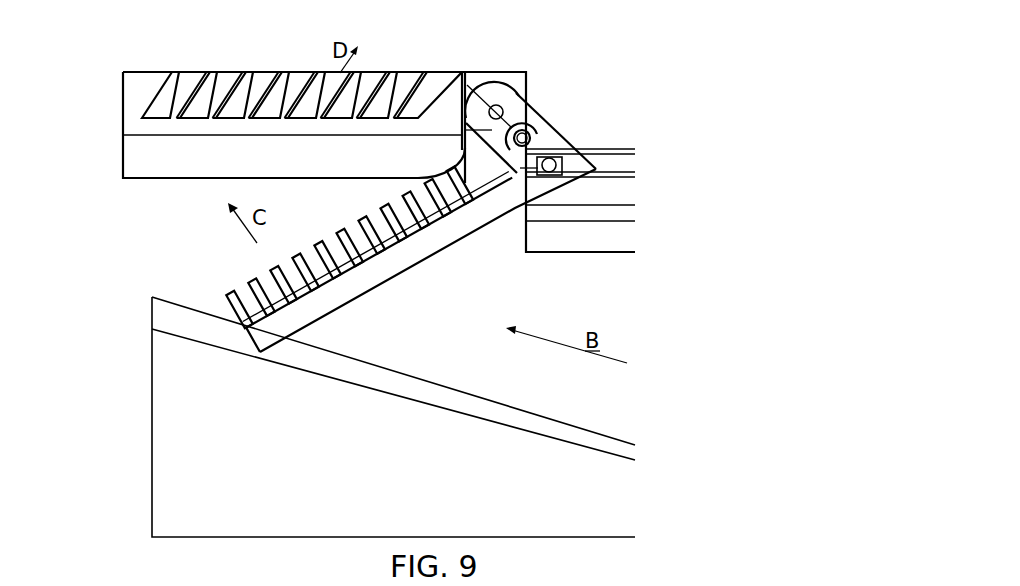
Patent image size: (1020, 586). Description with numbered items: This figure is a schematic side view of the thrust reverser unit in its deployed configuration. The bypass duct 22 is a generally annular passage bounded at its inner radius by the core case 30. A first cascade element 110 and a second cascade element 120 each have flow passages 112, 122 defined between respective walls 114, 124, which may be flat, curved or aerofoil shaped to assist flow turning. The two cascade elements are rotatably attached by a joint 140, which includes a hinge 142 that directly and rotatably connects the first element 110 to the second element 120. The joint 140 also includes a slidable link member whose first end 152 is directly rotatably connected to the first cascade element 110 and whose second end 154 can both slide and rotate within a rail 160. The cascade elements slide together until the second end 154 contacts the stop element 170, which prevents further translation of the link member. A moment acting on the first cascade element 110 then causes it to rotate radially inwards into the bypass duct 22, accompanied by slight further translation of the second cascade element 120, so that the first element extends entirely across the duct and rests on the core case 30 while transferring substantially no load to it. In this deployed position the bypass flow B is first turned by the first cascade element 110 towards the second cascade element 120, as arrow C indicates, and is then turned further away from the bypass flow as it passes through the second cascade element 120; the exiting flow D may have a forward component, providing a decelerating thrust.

The bypass duct 22 is at (583, 301).
The core case 30 is at (596, 443).
The first cascade element 110 is at (328, 308).
The flow passages 112 is at (322, 246).
The walls 114 is at (272, 280).
The second cascade element 120 is at (133, 100).
The flow passages 122 is at (295, 82).
The walls 124 is at (242, 72).
The joint 140 is at (576, 56).
The hinge 142 is at (503, 108).
The first end 152 is at (531, 131).
The second end 154 is at (555, 159).
The rail 160 is at (628, 148).
The stop element 170 is at (530, 168).